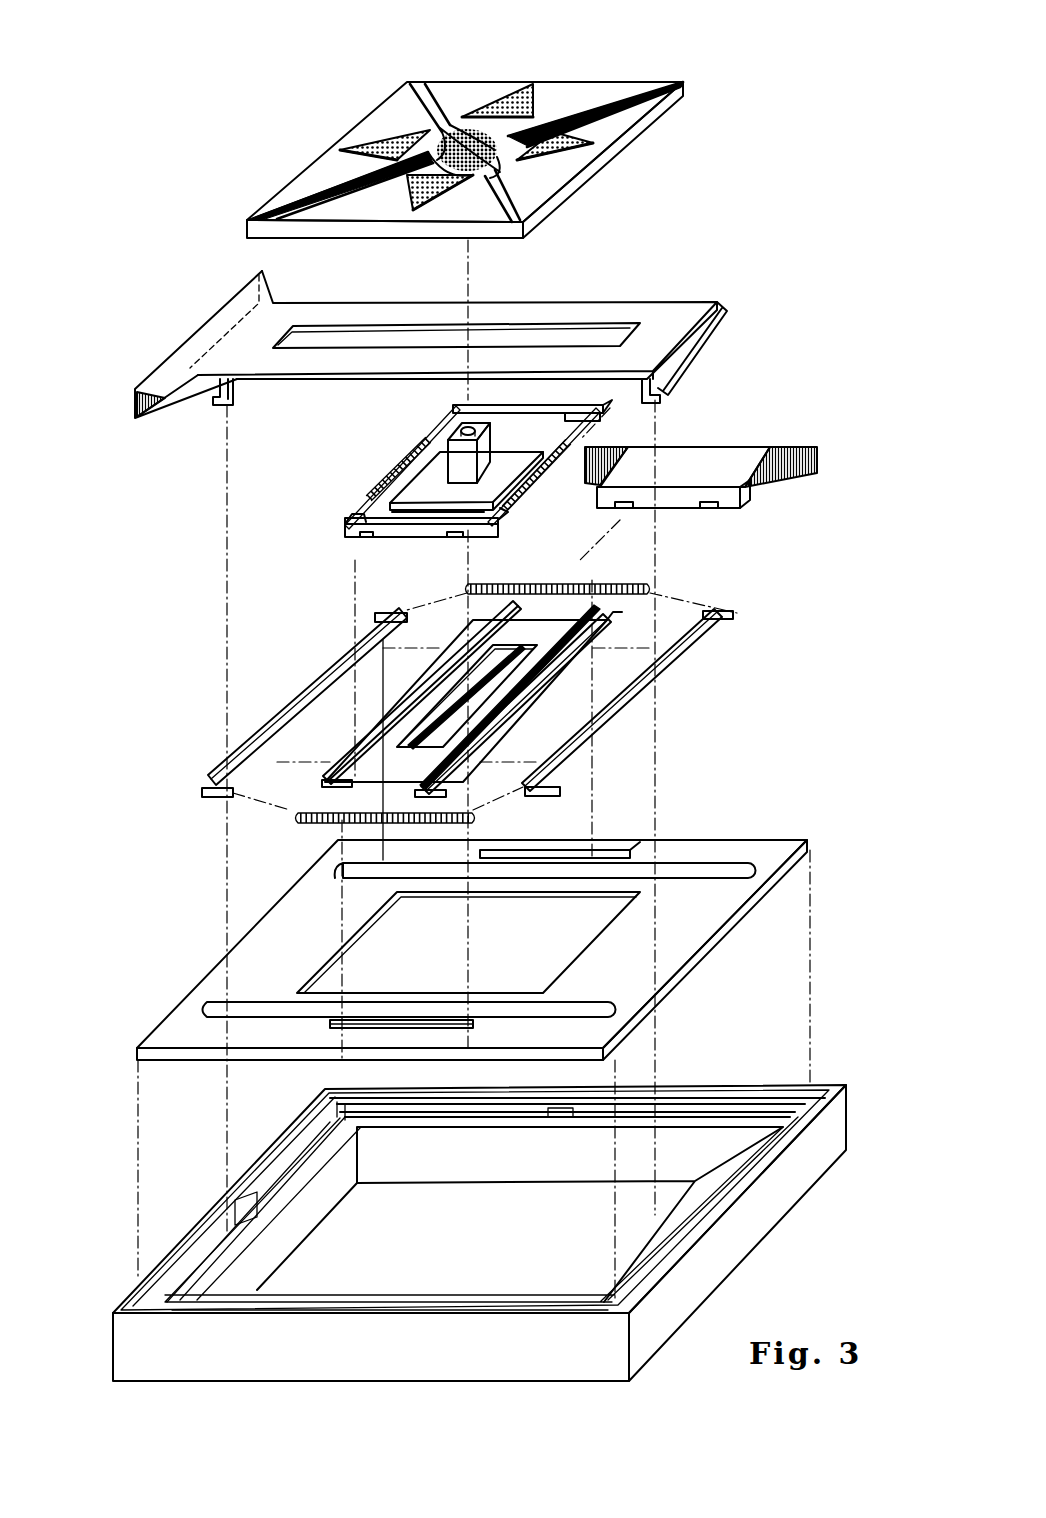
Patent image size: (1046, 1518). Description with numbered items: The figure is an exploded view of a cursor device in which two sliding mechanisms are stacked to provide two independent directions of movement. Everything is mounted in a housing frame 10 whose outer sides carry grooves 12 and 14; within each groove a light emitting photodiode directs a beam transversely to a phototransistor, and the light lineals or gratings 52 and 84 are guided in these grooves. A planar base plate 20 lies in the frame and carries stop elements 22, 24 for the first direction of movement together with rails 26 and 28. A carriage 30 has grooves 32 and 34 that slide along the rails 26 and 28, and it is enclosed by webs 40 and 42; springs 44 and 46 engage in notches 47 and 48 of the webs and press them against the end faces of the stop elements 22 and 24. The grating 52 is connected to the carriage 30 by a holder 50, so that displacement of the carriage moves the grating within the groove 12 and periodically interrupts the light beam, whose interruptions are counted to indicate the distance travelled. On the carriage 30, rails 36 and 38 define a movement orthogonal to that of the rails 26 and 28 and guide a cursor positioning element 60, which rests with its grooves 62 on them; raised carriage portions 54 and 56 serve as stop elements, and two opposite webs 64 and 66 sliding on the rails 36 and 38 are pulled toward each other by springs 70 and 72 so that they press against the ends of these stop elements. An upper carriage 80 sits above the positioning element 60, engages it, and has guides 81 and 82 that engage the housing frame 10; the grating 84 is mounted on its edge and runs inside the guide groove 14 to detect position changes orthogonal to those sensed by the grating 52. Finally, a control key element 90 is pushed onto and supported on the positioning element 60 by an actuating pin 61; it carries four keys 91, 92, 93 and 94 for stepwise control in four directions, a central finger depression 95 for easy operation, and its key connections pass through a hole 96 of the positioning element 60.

The housing frame 10 is at (741, 1228).
The groove 12 is at (682, 1103).
The groove 14 is at (270, 1182).
The planar base plate 20 is at (180, 937).
The stop element 22 is at (420, 1022).
The stop element 24 is at (632, 848).
The rail 26 is at (220, 1003).
The rail 28 is at (355, 870).
The carriage 30 is at (446, 618).
The groove 32 is at (478, 768).
The groove 34 is at (645, 606).
The rail 36 is at (363, 753).
The rail 38 is at (490, 717).
The web 40 is at (683, 675).
The web 42 is at (312, 690).
The spring 44 is at (305, 834).
The spring 46 is at (605, 578).
The notch 47 is at (737, 615).
The notch 48 is at (376, 617).
The holder 50 is at (732, 492).
The light lineal or grating 52 is at (735, 478).
The raised carriage portion 54 is at (440, 697).
The raised carriage portion 56 is at (557, 677).
The cursor positioning element 60 is at (428, 490).
The actuating pin 61 is at (460, 462).
The grooves 62 is at (503, 520).
The web 64 is at (352, 528).
The web 66 is at (490, 408).
The spring 70 is at (370, 470).
The spring 72 is at (653, 417).
The upper carriage 80 is at (668, 308).
The guide 81 is at (722, 318).
The guide 82 is at (210, 412).
The light lineal or grating 84 is at (136, 406).
The control key element 90 is at (243, 166).
The key 91 is at (530, 90).
The key 92 is at (413, 210).
The key 93 is at (365, 134).
The key 94 is at (580, 150).
The finger depression 95 is at (505, 168).
The hole 96 is at (455, 432).